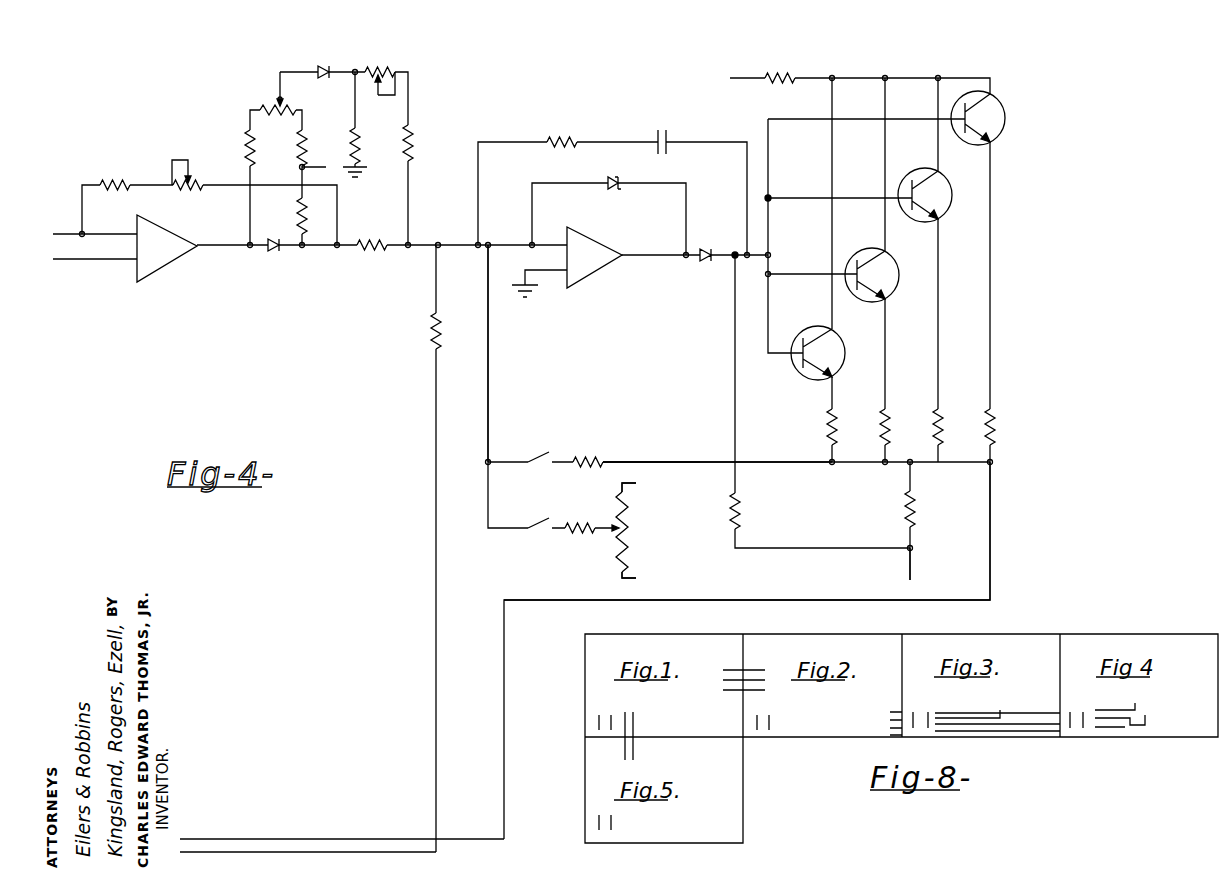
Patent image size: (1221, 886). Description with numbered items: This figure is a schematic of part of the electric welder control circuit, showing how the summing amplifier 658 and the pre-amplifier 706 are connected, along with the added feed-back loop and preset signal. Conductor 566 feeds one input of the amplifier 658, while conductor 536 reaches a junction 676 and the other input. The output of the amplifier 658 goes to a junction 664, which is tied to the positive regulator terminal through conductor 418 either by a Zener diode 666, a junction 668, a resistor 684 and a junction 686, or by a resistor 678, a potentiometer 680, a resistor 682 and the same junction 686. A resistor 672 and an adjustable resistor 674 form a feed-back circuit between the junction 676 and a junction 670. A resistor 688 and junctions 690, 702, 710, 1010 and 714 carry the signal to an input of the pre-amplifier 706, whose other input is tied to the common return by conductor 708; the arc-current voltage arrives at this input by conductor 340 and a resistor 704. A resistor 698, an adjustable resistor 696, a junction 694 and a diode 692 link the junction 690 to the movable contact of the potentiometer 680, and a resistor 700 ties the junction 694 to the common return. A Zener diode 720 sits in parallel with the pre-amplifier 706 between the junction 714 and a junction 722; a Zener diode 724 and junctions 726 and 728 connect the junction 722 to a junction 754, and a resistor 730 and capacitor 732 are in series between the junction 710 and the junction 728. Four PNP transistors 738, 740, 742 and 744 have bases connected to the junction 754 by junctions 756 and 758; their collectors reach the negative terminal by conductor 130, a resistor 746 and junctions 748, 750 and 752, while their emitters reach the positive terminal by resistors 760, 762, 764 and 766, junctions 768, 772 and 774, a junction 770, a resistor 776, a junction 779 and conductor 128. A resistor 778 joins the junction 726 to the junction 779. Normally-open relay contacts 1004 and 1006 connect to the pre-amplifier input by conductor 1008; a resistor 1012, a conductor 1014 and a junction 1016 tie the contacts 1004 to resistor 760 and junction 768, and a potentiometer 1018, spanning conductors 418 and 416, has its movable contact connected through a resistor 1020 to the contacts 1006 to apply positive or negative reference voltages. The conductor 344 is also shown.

The conductor 130 is at (733, 68).
The conductor 128 is at (912, 570).
The conductor 340 is at (285, 852).
The ground conductor 344 is at (992, 560).
The conductor 416 is at (642, 578).
The conductor 418 is at (326, 167).
The conductor 536 is at (70, 230).
The conductor 566 is at (112, 259).
The amplifier 658 is at (174, 266).
The junction 664 is at (248, 242).
The Zener diode 666 is at (273, 251).
The junction 668 is at (304, 248).
The junction 670 is at (339, 244).
The resistor 672 is at (124, 183).
The adjustable resistor 674 is at (196, 199).
The junction 676 is at (84, 232).
The resistor 678 is at (246, 135).
The potentiometer 680 is at (266, 103).
The resistor 682 is at (304, 130).
The resistor 684 is at (298, 216).
The junction 686 is at (300, 168).
The resistor 688 is at (360, 250).
The junction 690 is at (410, 244).
The diode 692 is at (320, 72).
The junction 694 is at (358, 58).
The adjustable resistor 696 is at (389, 71).
The resistor 698 is at (416, 137).
The resistor 700 is at (358, 140).
The junction 702 is at (441, 250).
The resistor 704 is at (428, 338).
The pre-amplifier 706 is at (587, 278).
The conductor 708 is at (556, 275).
The junction 710 is at (474, 258).
The junction 714 is at (533, 241).
The Zener diode 720 is at (615, 188).
The junction 722 is at (686, 258).
The Zener diode 724 is at (704, 250).
The junction 726 is at (733, 258).
The junction 728 is at (750, 258).
The resistor 730 is at (550, 140).
The capacitor 732 is at (672, 137).
The PNP transistor 738 is at (814, 377).
The PNP transistor 740 is at (874, 299).
The PNP transistor 742 is at (929, 224).
The PNP transistor 744 is at (980, 144).
The resistor 746 is at (788, 66).
The junction 748 is at (838, 66).
The junction 750 is at (890, 66).
The junction 752 is at (946, 66).
The junction 754 is at (770, 255).
The junction 756 is at (769, 198).
The junction 758 is at (770, 274).
The resistor 760 is at (826, 442).
The resistor 762 is at (885, 408).
The resistor 764 is at (880, 460).
The resistor 766 is at (996, 418).
The junction 768 is at (882, 465).
The junction 770 is at (912, 464).
The junction 772 is at (936, 453).
The junction 774 is at (993, 461).
The resistor 776 is at (917, 510).
The resistor 778 is at (742, 504).
The junction 779 is at (913, 548).
The relay contacts 1004 is at (536, 460).
The relay contacts 1006 is at (534, 530).
The conductor 1008 is at (490, 390).
The junction 1010 is at (489, 242).
The resistor 1012 is at (595, 460).
The conductor 1014 is at (682, 462).
The junction 1016 is at (828, 465).
The potentiometer 1018 is at (629, 524).
The resistor 1020 is at (588, 532).